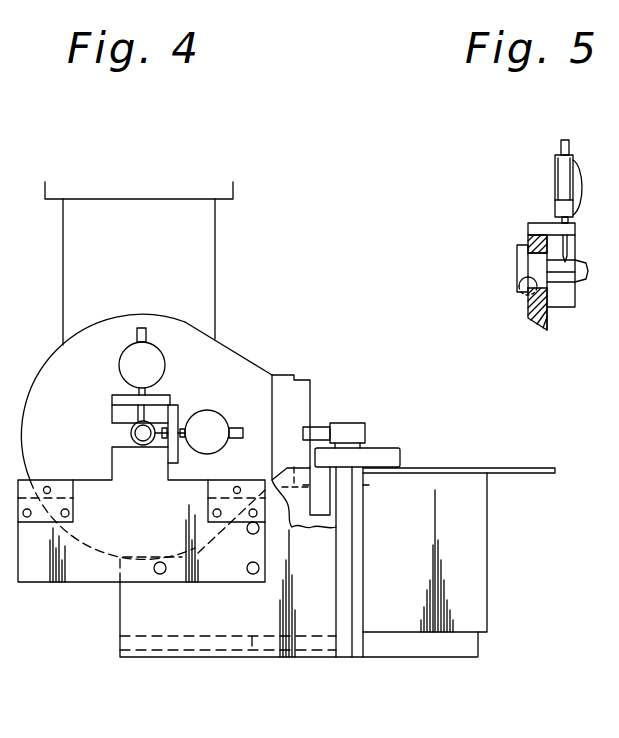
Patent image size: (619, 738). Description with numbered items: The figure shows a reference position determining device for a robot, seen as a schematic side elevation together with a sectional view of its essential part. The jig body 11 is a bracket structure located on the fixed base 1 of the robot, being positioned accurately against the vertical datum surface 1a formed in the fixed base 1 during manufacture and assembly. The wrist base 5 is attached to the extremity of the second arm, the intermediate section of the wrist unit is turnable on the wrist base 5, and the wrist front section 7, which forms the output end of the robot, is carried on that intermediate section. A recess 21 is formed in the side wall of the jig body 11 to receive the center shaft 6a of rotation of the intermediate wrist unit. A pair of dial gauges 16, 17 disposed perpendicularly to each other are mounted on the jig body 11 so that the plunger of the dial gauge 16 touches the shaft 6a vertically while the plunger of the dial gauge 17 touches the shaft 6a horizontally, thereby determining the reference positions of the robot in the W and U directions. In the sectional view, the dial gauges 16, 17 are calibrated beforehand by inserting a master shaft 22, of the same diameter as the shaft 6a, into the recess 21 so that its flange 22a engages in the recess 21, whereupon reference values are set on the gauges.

In FIG. 4, the fixed base 1 is at (418, 497).
In FIG. 4, the vertical datum surface 1a is at (351, 625).
In FIG. 4, the wrist base 5 is at (48, 383).
In FIG. 4, the center shaft 6a is at (131, 433).
In FIG. 4, the wrist front section 7 is at (283, 410).
In FIG. 4, the jig body 11 is at (260, 610).
In FIG. 5, the jig body 11 is at (535, 230).
In FIG. 4, the dial gauge 16 is at (160, 364).
In FIG. 5, the dial gauge 16 is at (580, 172).
In FIG. 4, the dial gauge 17 is at (210, 421).
In FIG. 4, the recess 21 is at (118, 437).
In FIG. 5, the recess 21 is at (523, 294).
In FIG. 5, the master shaft 22 is at (580, 283).
In FIG. 5, the flange 22a is at (518, 267).